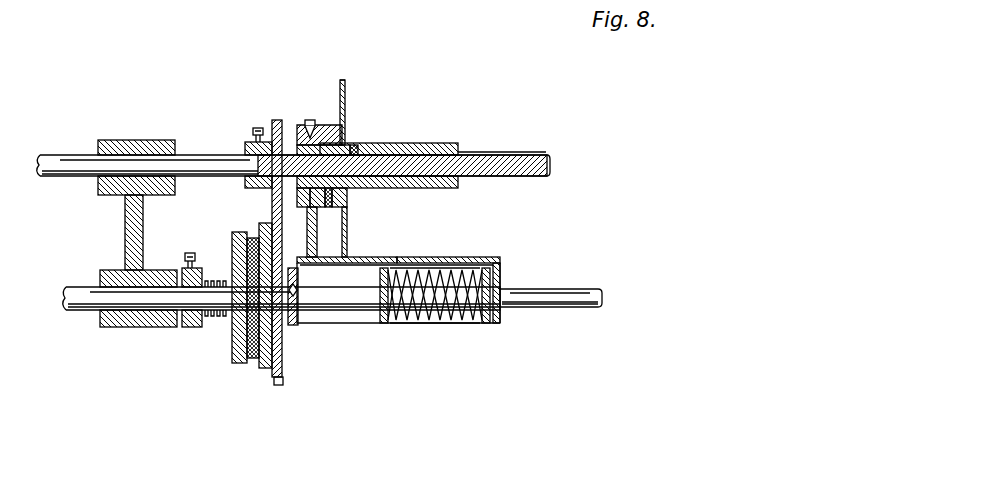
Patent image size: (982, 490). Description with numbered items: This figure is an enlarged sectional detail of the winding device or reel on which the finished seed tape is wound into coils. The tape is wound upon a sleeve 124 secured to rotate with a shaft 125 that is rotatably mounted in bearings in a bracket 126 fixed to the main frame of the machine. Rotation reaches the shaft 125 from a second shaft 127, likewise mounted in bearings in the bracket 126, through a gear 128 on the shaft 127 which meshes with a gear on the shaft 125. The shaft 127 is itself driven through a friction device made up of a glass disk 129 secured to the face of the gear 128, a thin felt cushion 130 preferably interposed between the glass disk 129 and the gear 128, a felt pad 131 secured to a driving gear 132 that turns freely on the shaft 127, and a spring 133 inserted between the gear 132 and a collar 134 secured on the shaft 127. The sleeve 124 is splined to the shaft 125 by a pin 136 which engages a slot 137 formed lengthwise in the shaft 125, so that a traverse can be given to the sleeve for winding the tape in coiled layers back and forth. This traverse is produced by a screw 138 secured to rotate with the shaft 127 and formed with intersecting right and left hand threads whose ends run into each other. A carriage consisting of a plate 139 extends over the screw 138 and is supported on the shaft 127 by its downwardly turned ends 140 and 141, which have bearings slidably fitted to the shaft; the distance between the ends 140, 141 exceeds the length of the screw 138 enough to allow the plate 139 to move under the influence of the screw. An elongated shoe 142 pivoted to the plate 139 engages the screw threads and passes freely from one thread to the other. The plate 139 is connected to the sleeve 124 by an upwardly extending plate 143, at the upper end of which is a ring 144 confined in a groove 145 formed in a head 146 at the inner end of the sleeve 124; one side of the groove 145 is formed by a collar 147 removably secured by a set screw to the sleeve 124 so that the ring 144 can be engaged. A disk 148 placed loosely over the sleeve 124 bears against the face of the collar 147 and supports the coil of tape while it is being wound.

The sleeve 124 is at (462, 121).
The shaft 125 is at (550, 159).
The bracket 126 is at (124, 229).
The shaft 127 is at (605, 290).
The gear 128 is at (280, 382).
The glass disk 129 is at (264, 370).
The felt cushion 130 is at (272, 384).
The felt pad 131 is at (250, 365).
The driving gear 132 is at (236, 358).
The spring 133 is at (216, 320).
The collar 134 is at (188, 326).
The pin 136 is at (358, 146).
The slot 137 is at (502, 153).
The screw 138 is at (450, 321).
The plate 139 is at (470, 247).
The downwardly turned end 140 is at (502, 280).
The downwardly turned end 141 is at (300, 323).
The shoe 142 is at (394, 259).
The plate 143 is at (316, 231).
The ring 144 is at (307, 122).
The groove 145 is at (318, 122).
The head 146 is at (302, 193).
The collar 147 is at (346, 128).
The disk 148 is at (346, 85).